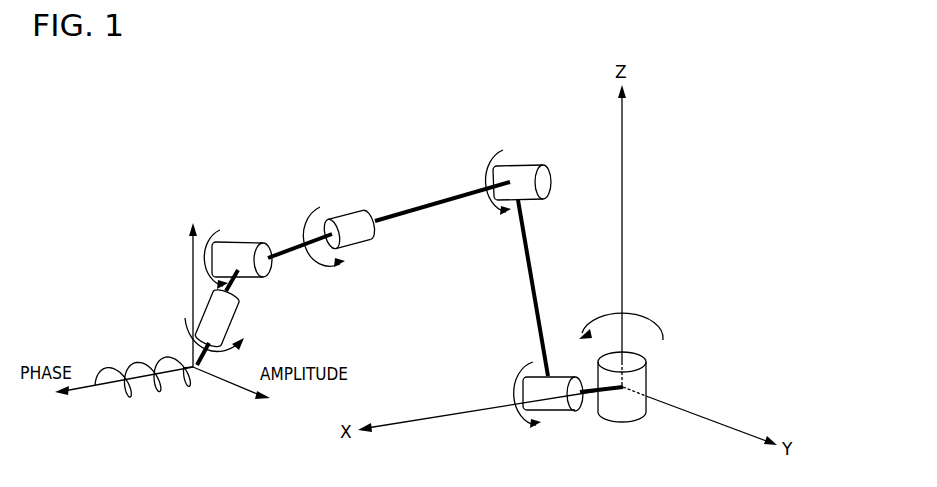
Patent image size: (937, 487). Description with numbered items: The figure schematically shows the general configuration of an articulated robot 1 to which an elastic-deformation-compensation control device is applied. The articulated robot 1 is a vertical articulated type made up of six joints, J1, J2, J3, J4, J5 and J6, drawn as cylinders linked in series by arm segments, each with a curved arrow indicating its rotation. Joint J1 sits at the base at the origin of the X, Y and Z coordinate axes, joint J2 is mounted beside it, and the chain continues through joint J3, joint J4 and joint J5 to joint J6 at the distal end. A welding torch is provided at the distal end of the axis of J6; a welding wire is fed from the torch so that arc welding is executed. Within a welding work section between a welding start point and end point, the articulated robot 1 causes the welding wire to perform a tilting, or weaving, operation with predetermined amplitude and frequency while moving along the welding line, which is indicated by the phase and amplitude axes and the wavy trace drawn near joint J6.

The articulated robot 1 is at (362, 124).
The joint J1 is at (624, 367).
The joint J2 is at (548, 401).
The joint J3 is at (518, 179).
The joint J4 is at (340, 239).
The joint J5 is at (251, 259).
The joint J6 is at (221, 319).